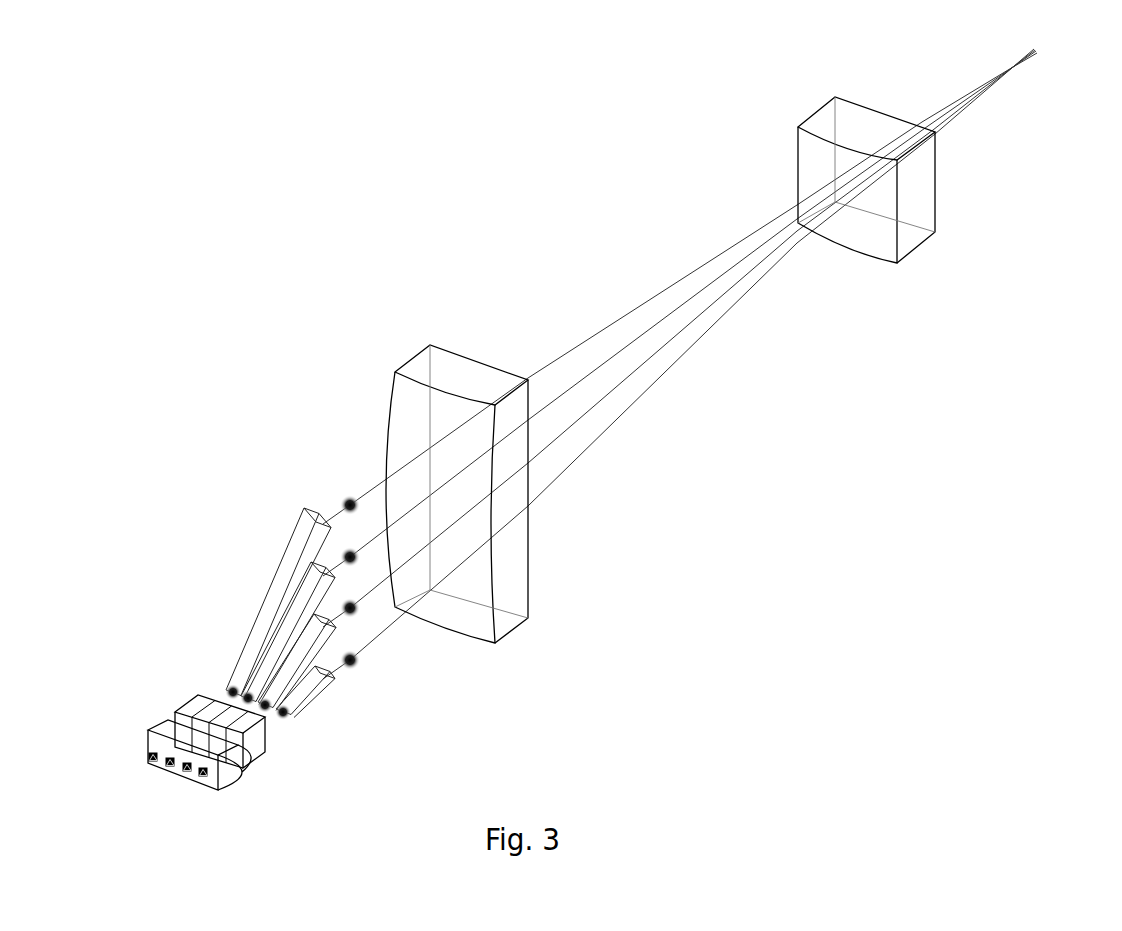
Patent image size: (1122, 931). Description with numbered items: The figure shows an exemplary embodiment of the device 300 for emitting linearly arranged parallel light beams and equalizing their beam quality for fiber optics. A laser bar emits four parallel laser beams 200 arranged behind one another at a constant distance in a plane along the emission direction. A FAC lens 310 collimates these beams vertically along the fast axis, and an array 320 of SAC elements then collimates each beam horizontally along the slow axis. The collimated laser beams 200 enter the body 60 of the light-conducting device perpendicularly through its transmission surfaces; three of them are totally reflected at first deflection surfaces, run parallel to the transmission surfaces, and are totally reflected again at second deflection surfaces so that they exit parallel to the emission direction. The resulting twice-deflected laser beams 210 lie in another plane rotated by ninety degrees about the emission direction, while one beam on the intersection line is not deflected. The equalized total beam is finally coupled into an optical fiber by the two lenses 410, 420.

The body 60 is at (258, 617).
The laser beams 200 is at (235, 697).
The twice-deflected laser beams 210 is at (368, 480).
The device 300 is at (613, 241).
The FAC lens 310 is at (147, 756).
The array of SAC elements 320 is at (187, 698).
The lens 410 is at (468, 358).
The lens 420 is at (925, 247).